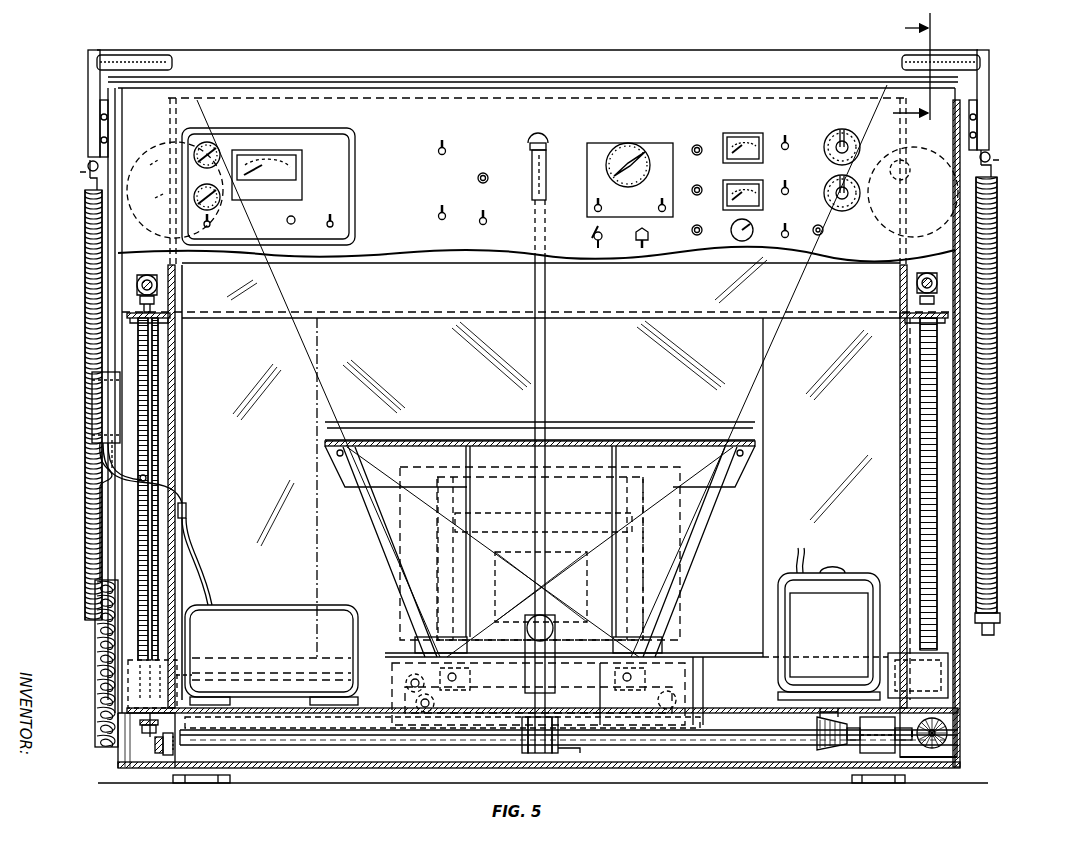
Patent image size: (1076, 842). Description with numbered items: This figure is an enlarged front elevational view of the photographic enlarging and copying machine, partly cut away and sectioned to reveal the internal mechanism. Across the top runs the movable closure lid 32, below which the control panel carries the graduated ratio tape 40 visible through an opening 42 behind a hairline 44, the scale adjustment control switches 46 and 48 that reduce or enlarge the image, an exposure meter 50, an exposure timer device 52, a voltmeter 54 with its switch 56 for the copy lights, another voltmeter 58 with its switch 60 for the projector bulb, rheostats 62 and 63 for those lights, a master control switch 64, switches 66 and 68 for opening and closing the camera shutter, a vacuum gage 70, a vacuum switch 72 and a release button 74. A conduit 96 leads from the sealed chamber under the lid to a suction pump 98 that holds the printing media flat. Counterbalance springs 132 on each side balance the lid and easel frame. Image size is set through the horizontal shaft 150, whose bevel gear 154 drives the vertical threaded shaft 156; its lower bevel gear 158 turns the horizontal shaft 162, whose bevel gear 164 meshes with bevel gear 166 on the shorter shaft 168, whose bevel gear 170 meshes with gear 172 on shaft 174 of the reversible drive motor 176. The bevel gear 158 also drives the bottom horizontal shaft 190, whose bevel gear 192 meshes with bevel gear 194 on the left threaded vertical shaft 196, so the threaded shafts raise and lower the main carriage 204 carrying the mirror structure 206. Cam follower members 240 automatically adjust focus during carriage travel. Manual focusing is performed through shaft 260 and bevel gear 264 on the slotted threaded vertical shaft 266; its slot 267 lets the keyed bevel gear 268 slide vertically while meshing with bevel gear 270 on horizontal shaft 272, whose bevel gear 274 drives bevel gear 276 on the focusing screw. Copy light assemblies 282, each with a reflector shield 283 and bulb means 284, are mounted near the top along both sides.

The movable closure lid 32 is at (640, 46).
The graduated ratio tape 40 is at (545, 362).
The opening 42 is at (545, 160).
The hairline 44 is at (532, 175).
The scale adjustment control switch 46 is at (447, 147).
The scale adjustment control switch 48 is at (438, 212).
The exposure meter 50 is at (357, 146).
The exposure timer device 52 is at (630, 140).
The voltmeter 54 is at (740, 134).
The switch 56 is at (787, 140).
The voltmeter 58 is at (723, 200).
The switch 60 is at (787, 187).
The rheostat 62 is at (850, 132).
The rheostat 63 is at (860, 203).
The master control switch 64 is at (475, 224).
The switch 66 is at (596, 250).
The switch 68 is at (643, 250).
The vacuum gage 70 is at (737, 242).
The switch 72 is at (787, 230).
The release button 74 is at (818, 240).
The conduit 96 is at (185, 415).
The suction pump 98 is at (260, 605).
The counterbalance spring 132 is at (88, 352).
The horizontal shaft 150 is at (918, 285).
The bevel gear 154 is at (950, 300).
The vertical threaded shaft 156 is at (920, 425).
The bevel gear 158 is at (957, 717).
The horizontal shaft 162 is at (947, 734).
The bevel gear 164 is at (957, 752).
The bevel gear 166 is at (928, 752).
The shorter shaft 168 is at (875, 755).
The bevel gear 170 is at (855, 748).
The gear 172 is at (822, 748).
The shaft 174 is at (830, 708).
The drive motor 176 is at (850, 575).
The horizontal shaft 190 is at (300, 735).
The bevel gear 192 is at (158, 755).
The bevel gear 194 is at (140, 738).
The threaded vertical shaft 196 is at (140, 726).
The main carriage 204 is at (698, 652).
The mirror structure 206 is at (565, 418).
The cam follower member 240 is at (160, 318).
The shaft 260 is at (138, 286).
The bevel gear 264 is at (138, 300).
The threaded vertical shaft 266 is at (165, 528).
The slot 267 is at (150, 478).
The bevel gear 268 is at (125, 680).
The bevel gear 270 is at (175, 656).
The horizontal shaft 272 is at (245, 675).
The bevel gear 274 is at (405, 672).
The bevel gear 276 is at (405, 650).
The copy light assembly 282 is at (125, 152).
The reflector shield 283 is at (125, 210).
The bulb means 284 is at (905, 180).